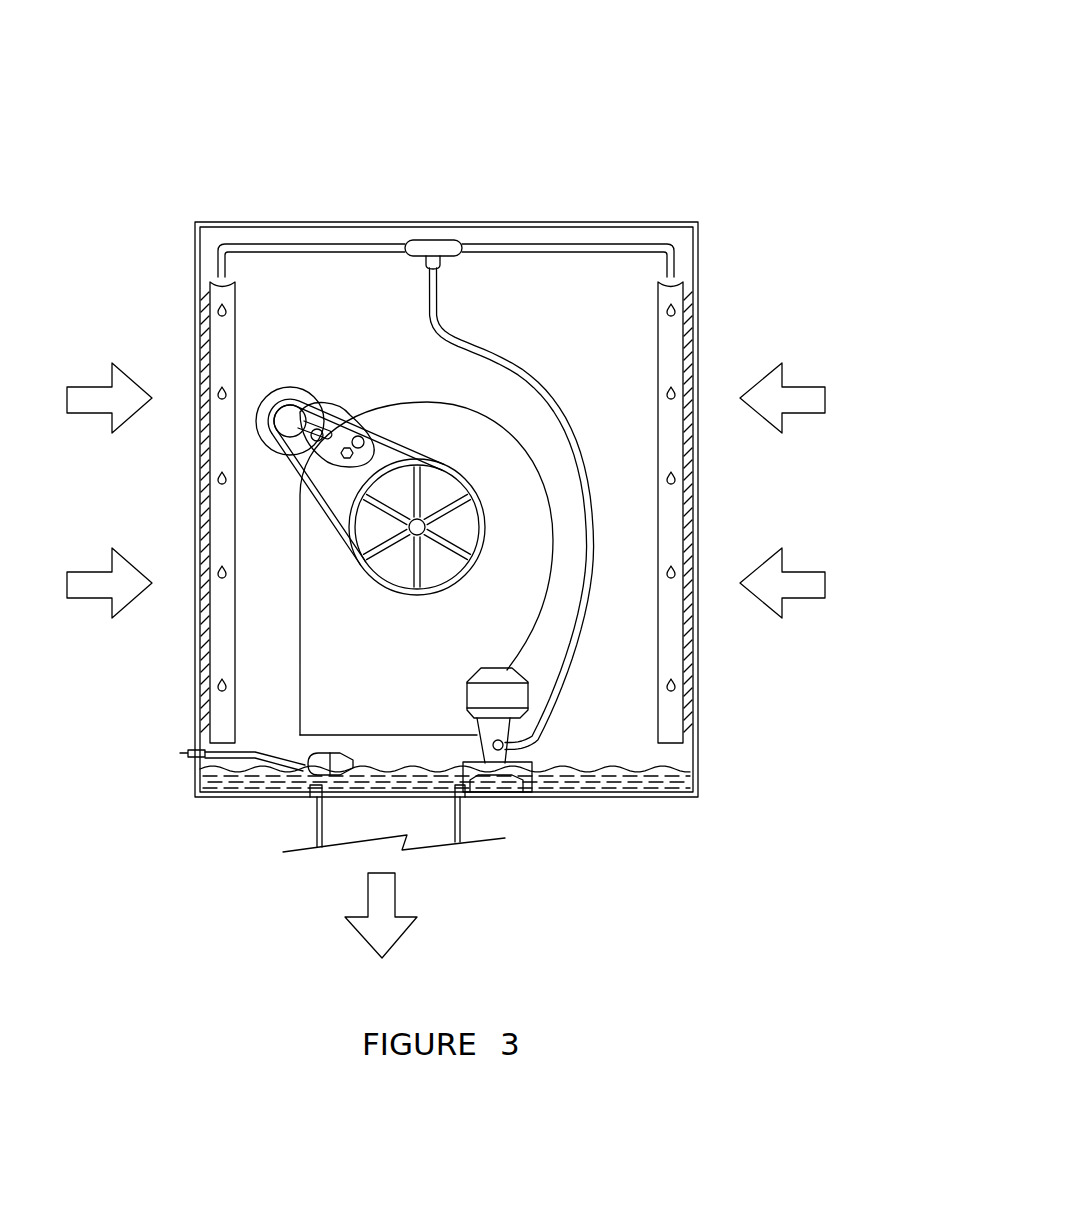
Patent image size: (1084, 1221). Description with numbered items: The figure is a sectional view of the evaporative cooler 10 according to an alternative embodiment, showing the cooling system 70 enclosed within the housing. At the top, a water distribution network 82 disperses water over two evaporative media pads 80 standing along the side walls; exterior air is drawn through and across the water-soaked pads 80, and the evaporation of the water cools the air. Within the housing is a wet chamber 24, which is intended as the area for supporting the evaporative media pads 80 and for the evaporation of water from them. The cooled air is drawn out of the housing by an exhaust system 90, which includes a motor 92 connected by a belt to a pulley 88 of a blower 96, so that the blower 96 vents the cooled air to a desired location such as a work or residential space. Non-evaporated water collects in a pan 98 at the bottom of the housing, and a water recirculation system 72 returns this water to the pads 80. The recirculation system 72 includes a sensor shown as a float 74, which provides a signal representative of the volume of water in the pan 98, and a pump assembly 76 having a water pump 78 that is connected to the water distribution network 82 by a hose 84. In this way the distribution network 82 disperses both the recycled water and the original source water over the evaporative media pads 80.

The evaporative cooler 10 is at (706, 40).
The cooling system 70 is at (604, 117).
The wet chamber 24 is at (524, 266).
The water distribution network 82 is at (432, 248).
The hose 84 is at (540, 372).
The evaporative media pads 80 is at (218, 490).
The exhaust system 90 is at (317, 320).
The motor 92 is at (305, 392).
The pulley 88 is at (472, 493).
The blower 96 is at (305, 632).
The water pump 78 is at (523, 698).
The float 74 is at (332, 753).
The pan 98 is at (231, 790).
The pump assembly 76 is at (512, 833).
The water recirculation system 72 is at (605, 892).